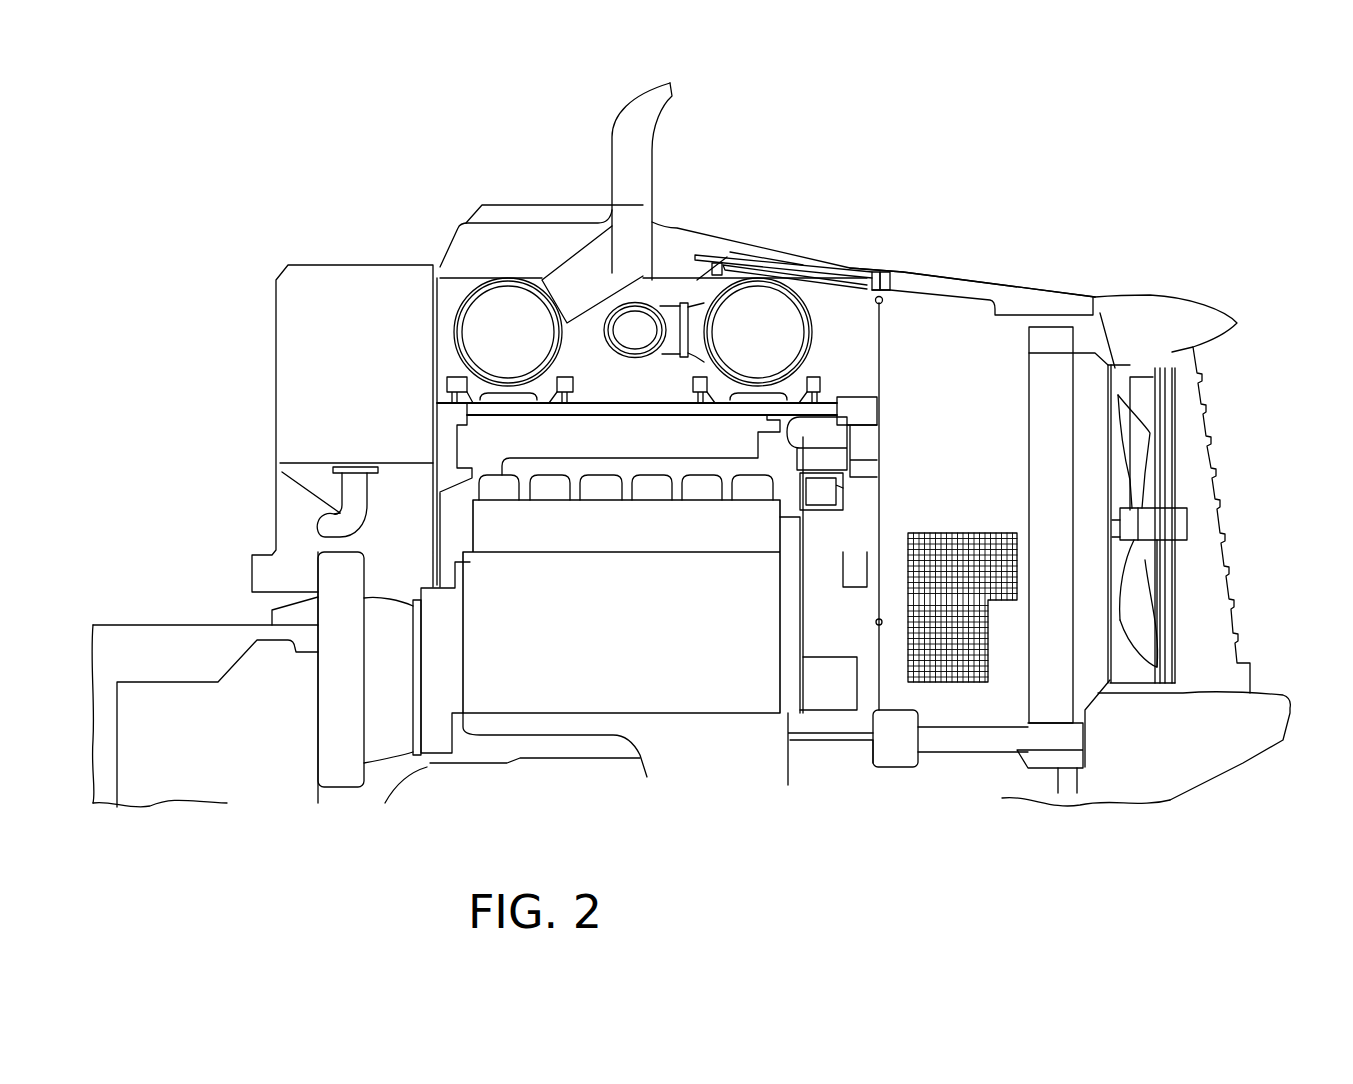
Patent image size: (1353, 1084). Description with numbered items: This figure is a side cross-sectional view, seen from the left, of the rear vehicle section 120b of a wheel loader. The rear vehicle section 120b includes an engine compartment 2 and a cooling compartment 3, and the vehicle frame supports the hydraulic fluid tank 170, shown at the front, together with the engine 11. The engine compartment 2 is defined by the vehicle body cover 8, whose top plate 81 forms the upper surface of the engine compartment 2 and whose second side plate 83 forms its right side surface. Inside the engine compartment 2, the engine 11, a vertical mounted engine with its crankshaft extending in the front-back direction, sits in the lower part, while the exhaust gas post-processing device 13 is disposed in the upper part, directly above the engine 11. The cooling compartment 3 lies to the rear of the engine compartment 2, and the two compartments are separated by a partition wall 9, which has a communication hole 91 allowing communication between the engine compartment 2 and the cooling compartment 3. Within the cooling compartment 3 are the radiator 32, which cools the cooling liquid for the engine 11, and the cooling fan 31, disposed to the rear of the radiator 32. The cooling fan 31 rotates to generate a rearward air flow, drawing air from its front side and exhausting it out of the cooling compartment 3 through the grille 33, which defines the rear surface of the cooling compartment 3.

The engine compartment 2 is at (673, 258).
The cooling compartment 3 is at (965, 346).
The vehicle body cover 8 is at (902, 268).
The partition wall 9 is at (893, 767).
The engine 11 is at (688, 685).
The exhaust gas post-processing device 13 is at (508, 257).
The cooling fan 31 is at (1157, 445).
The radiator 32 is at (1050, 352).
The grille 33 is at (1230, 503).
The top plate 81 is at (713, 236).
The second side plate 83 is at (985, 708).
The communication hole 91 is at (883, 338).
The rear vehicle section 120b is at (558, 186).
The hydraulic fluid tank 170 is at (325, 280).